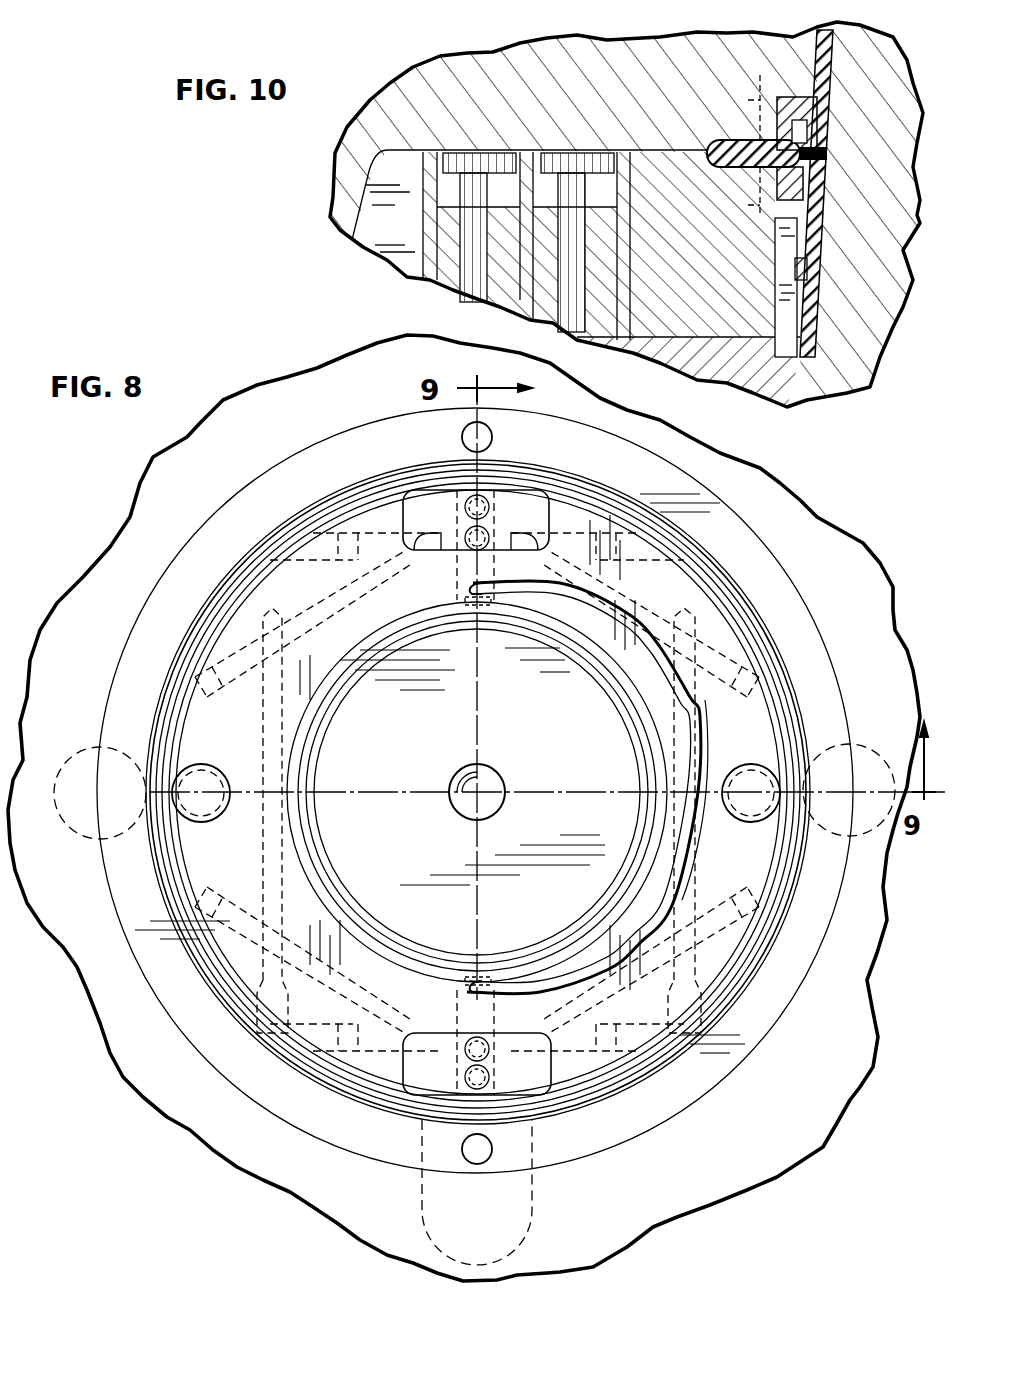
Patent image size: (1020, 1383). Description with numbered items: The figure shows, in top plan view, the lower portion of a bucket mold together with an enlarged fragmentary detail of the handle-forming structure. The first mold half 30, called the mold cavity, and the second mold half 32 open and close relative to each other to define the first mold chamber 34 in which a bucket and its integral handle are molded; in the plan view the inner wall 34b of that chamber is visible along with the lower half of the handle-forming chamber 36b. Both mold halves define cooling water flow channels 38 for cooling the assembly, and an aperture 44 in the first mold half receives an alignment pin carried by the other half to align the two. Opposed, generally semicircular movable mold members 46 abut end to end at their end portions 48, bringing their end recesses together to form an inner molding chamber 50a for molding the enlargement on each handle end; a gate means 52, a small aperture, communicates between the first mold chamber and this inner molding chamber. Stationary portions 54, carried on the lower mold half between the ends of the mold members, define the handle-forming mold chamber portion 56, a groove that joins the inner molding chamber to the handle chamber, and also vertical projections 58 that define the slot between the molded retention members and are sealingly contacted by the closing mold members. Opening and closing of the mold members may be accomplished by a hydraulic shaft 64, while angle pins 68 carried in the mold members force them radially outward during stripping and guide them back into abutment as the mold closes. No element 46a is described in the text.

In FIG. 10, the first mold half 30 is at (612, 119).
In FIG. 10, the second mold half 32 is at (869, 304).
In FIG. 10, the first mold chamber 34 is at (810, 255).
In FIG. 8, the inner wall of mold chamber 34b is at (643, 728).
In FIG. 8, the lower half of handle-forming chamber 36b is at (700, 725).
In FIG. 8, the cooling water flow channels 38 is at (690, 565).
In FIG. 8, the aperture 44 is at (494, 437).
In FIG. 8, the movable mold members 46 is at (252, 612).
In FIG. 8, the retaining clip 46a is at (470, 610).
In FIG. 10, the end portions 48 is at (808, 120).
In FIG. 10, the inner molding chamber 50a is at (805, 130).
In FIG. 10, the gate means 52 is at (812, 153).
In FIG. 10, the stationary portions 54 is at (696, 284).
In FIG. 8, the stationary portions 54 is at (535, 500).
In FIG. 10, the handle-forming mold chamber portion 56 is at (735, 140).
In FIG. 8, the handle-forming mold chamber portion 56 is at (492, 577).
In FIG. 10, the vertical projections 58 is at (752, 98).
In FIG. 8, the hydraulic shaft 64 is at (82, 750).
In FIG. 8, the angle pins 68 is at (198, 772).